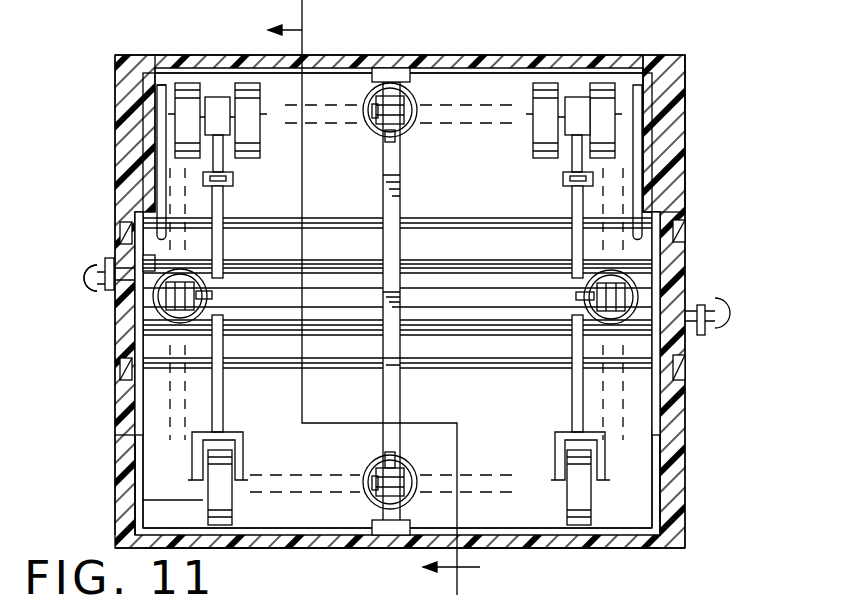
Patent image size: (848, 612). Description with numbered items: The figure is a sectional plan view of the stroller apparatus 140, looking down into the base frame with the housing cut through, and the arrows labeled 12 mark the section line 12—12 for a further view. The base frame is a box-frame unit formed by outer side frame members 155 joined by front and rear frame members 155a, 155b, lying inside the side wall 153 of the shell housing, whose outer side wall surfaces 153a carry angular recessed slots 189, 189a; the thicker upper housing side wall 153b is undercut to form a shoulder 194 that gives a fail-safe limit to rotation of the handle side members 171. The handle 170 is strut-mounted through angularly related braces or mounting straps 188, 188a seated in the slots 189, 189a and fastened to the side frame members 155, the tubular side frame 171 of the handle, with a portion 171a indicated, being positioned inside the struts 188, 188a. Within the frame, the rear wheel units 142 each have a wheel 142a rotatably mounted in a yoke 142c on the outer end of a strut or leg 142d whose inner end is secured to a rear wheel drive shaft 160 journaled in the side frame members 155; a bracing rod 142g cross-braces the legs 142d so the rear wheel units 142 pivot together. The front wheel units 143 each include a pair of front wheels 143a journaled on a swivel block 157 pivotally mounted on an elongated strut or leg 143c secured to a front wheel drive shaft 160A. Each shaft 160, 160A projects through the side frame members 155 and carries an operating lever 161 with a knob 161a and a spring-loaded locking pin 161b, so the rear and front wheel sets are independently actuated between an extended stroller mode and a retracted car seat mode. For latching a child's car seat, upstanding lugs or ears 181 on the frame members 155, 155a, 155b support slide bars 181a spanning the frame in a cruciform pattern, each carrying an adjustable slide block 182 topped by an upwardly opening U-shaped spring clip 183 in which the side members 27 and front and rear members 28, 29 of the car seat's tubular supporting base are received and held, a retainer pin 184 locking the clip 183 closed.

The section line 12- 12 is at (374, 297).
The side members 27 is at (125, 430).
The front member 28 is at (500, 72).
The rear member 29 is at (490, 500).
The stroller apparatus 140 is at (718, 213).
The rear wheel units 142 is at (630, 506).
The wheel 142a is at (218, 508).
The yoke 142c is at (192, 486).
The strut or leg 142d is at (205, 448).
The bracing rod 142g is at (433, 368).
The front wheel units 143 is at (655, 58).
The front wheels 143a is at (185, 95).
The strut or leg 143c is at (224, 200).
The side wall 153 is at (692, 119).
The outer side wall surfaces 153a is at (683, 188).
The upper housing side wall 153b is at (665, 105).
The outer side frame members 155 is at (118, 470).
The front frame member 155a is at (455, 55).
The rear frame member 155b is at (555, 548).
The swivel block 157 is at (218, 110).
The drive shaft 160 is at (490, 335).
The drive shaft 160A is at (315, 270).
The operating lever 161 is at (105, 262).
The handle or knob 161a is at (88, 290).
The spring-loaded locking pin 161b is at (143, 300).
The handle 170 is at (400, 580).
The tubular side frame 171 is at (155, 110).
The guide bar end 171a is at (155, 90).
The upstanding lugs or ears 181 is at (390, 70).
The slide bars or rods 181a is at (440, 290).
The slidable orientation block 182 is at (368, 102).
The U-shaped spring clip 183 is at (404, 104).
The retainer pin 184 is at (370, 140).
The brace or mounting strap 188 is at (135, 225).
The brace or mounting strap 188a is at (135, 380).
The recessed slot 189 is at (140, 195).
The recessed slot 189a is at (133, 410).
The shoulder 194 is at (125, 225).